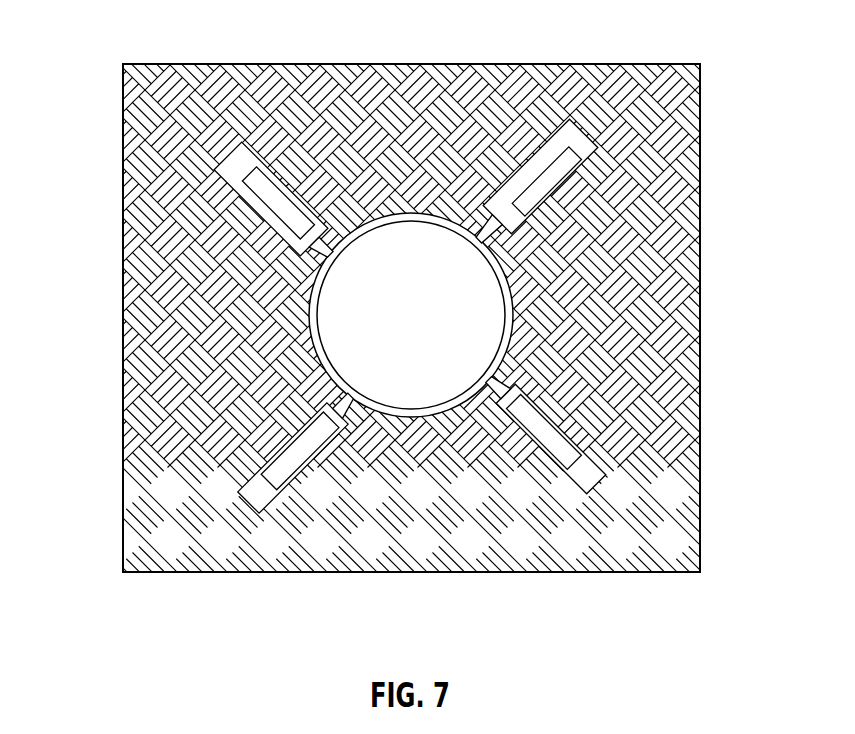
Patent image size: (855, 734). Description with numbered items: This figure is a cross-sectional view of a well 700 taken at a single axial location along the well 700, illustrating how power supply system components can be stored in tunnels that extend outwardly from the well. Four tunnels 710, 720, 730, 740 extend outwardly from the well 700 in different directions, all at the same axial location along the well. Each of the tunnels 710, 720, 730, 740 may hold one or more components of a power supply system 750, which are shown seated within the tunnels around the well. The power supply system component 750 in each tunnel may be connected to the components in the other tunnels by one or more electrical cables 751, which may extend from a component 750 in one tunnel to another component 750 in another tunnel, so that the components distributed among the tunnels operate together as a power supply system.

The well 700 is at (386, 258).
The tunnel 710 is at (585, 131).
The tunnel 720 is at (612, 485).
The tunnel 730 is at (246, 500).
The tunnel 740 is at (226, 152).
The power supply system component 750 is at (262, 201).
The electrical cable 751 is at (493, 400).